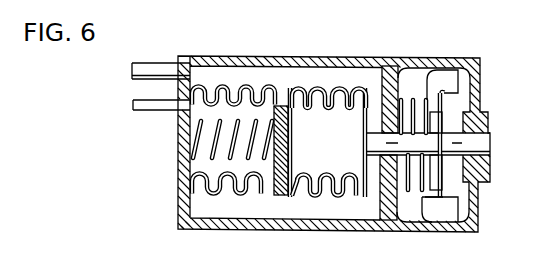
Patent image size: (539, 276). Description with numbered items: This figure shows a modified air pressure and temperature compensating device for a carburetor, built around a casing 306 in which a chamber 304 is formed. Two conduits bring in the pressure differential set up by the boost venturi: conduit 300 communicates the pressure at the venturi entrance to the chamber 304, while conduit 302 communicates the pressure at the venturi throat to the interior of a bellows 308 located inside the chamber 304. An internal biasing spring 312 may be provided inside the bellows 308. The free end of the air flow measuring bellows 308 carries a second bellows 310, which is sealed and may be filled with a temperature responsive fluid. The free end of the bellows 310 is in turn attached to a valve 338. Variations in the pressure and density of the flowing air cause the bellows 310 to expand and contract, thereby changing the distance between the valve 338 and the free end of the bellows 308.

The conduit 300 is at (145, 63).
The conduit 302 is at (145, 112).
The chamber 304 is at (237, 80).
The casing 306 is at (304, 57).
The bellows 308 is at (222, 197).
The second bellows 310 is at (317, 197).
The internal biasing spring 312 is at (210, 160).
The valve 338 is at (377, 138).